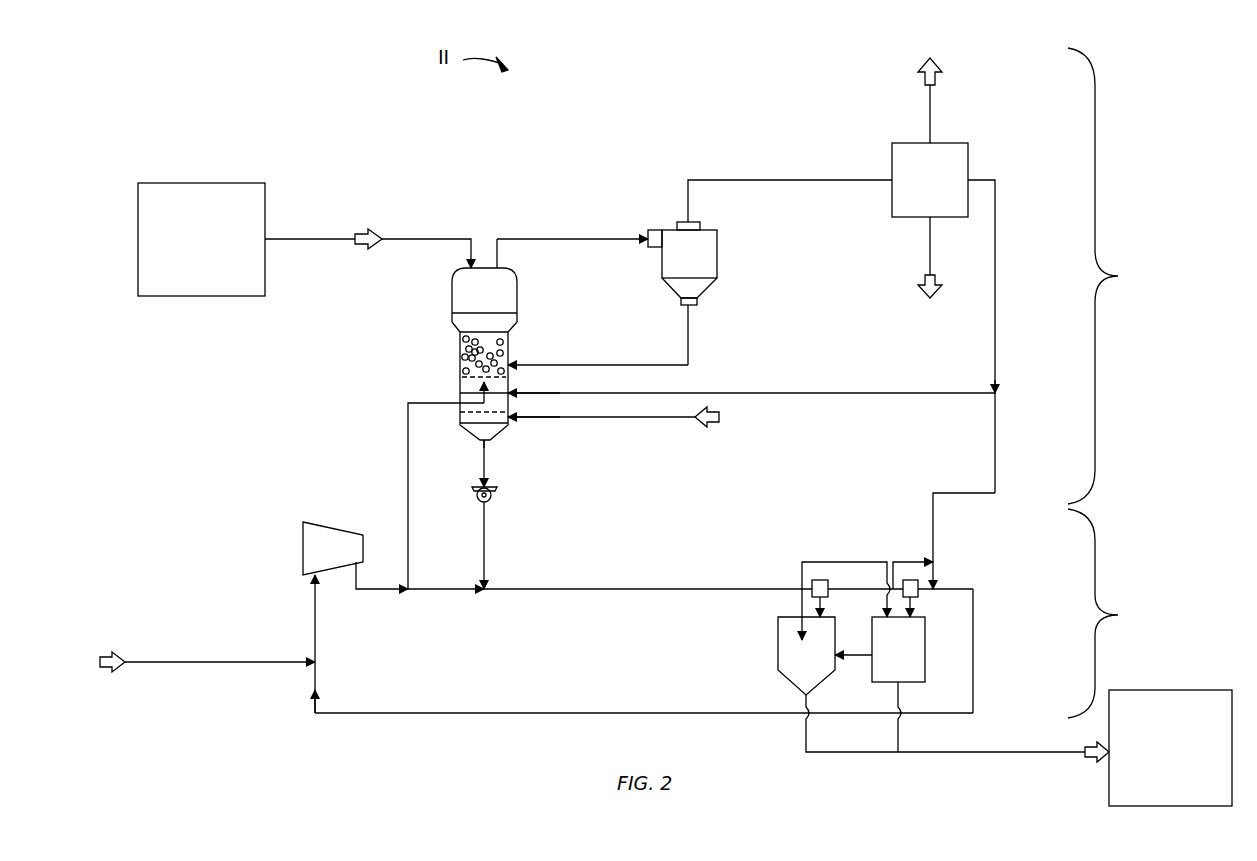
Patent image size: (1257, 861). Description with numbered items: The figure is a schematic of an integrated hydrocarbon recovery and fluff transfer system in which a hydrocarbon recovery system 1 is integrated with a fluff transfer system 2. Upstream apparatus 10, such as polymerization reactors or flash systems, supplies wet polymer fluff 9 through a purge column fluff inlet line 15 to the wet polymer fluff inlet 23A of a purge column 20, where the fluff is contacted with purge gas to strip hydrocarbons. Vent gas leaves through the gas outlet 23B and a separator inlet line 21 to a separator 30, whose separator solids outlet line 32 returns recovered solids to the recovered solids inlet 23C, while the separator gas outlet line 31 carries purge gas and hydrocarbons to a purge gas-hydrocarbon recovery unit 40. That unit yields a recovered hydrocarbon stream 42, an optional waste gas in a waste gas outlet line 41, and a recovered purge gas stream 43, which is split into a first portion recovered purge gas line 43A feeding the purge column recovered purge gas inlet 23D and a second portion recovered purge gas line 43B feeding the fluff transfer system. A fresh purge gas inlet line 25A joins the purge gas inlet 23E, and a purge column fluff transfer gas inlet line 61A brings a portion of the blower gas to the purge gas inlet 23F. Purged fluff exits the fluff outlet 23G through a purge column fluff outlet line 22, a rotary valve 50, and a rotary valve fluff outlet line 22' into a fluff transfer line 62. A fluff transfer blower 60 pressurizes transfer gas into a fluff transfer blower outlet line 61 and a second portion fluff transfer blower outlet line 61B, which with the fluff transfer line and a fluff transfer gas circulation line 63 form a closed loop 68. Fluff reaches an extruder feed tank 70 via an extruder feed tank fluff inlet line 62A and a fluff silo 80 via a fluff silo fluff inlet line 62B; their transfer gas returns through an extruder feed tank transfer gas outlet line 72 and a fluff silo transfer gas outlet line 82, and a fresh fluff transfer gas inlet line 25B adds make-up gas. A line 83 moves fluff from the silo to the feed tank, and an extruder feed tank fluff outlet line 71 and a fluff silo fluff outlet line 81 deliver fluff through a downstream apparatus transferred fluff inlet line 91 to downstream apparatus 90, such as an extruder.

The hydrocarbon recovery system 1 is at (1102, 276).
The fluff transfer system 2 is at (1094, 613).
The wet polymer fluff 9 is at (462, 345).
The upstream apparatus 10 is at (201, 239).
The purge column fluff inlet line 15 is at (392, 232).
The purge column 20 is at (452, 313).
The separator inlet line 21 is at (578, 237).
The purge column fluff outlet line 22 is at (513, 463).
The rotary valve fluff outlet line 22' is at (516, 545).
The wet polymer fluff inlet 23A is at (462, 270).
The gas outlet 23B is at (505, 268).
The recovered solids inlet 23C is at (512, 368).
The purge column recovered purge gas inlet 23D is at (512, 394).
The purge gas inlet 23E is at (512, 420).
The purge gas inlet 23F is at (456, 403).
The fluff outlet 23G is at (481, 443).
The fresh purge gas inlet line 25A is at (712, 424).
The fresh fluff transfer gas inlet line 25B is at (203, 664).
The separator 30 is at (717, 246).
The separator gas outlet line 31 is at (820, 182).
The separator solids outlet line 32 is at (690, 332).
The purge gas-hydrocarbon recovery unit 40 is at (930, 180).
The waste gas outlet line 41 is at (936, 85).
The recovered hydrocarbon stream 42 is at (924, 280).
The recovered purge gas stream 43 is at (996, 268).
The first portion recovered purge gas line 43A is at (838, 395).
The second portion recovered purge gas line 43B is at (996, 483).
The rotary valve 50 is at (497, 493).
The fluff transfer blower 60 is at (303, 540).
The fluff transfer blower outlet line 61 is at (372, 592).
The purge column fluff transfer gas inlet line 61A is at (408, 440).
The second portion fluff transfer blower outlet line 61B is at (437, 592).
The fluff transfer line 62 is at (645, 591).
The extruder feed tank fluff inlet line 62A is at (800, 597).
The fluff silo fluff inlet line 62B is at (830, 563).
The fluff transfer gas circulation line 63 is at (975, 630).
The closed loop 68 is at (528, 592).
The extruder feed tank 70 is at (806, 656).
The extruder feed tank fluff outlet line 71 is at (804, 737).
The extruder feed tank transfer gas outlet line 72 is at (830, 600).
The fluff silo 80 is at (898, 649).
The fluff silo fluff outlet line 81 is at (900, 740).
The fluff silo transfer gas outlet line 82 is at (918, 600).
The line 83 is at (858, 657).
The downstream apparatus 90 is at (1170, 748).
The downstream apparatus transferred fluff inlet line 91 is at (1038, 755).